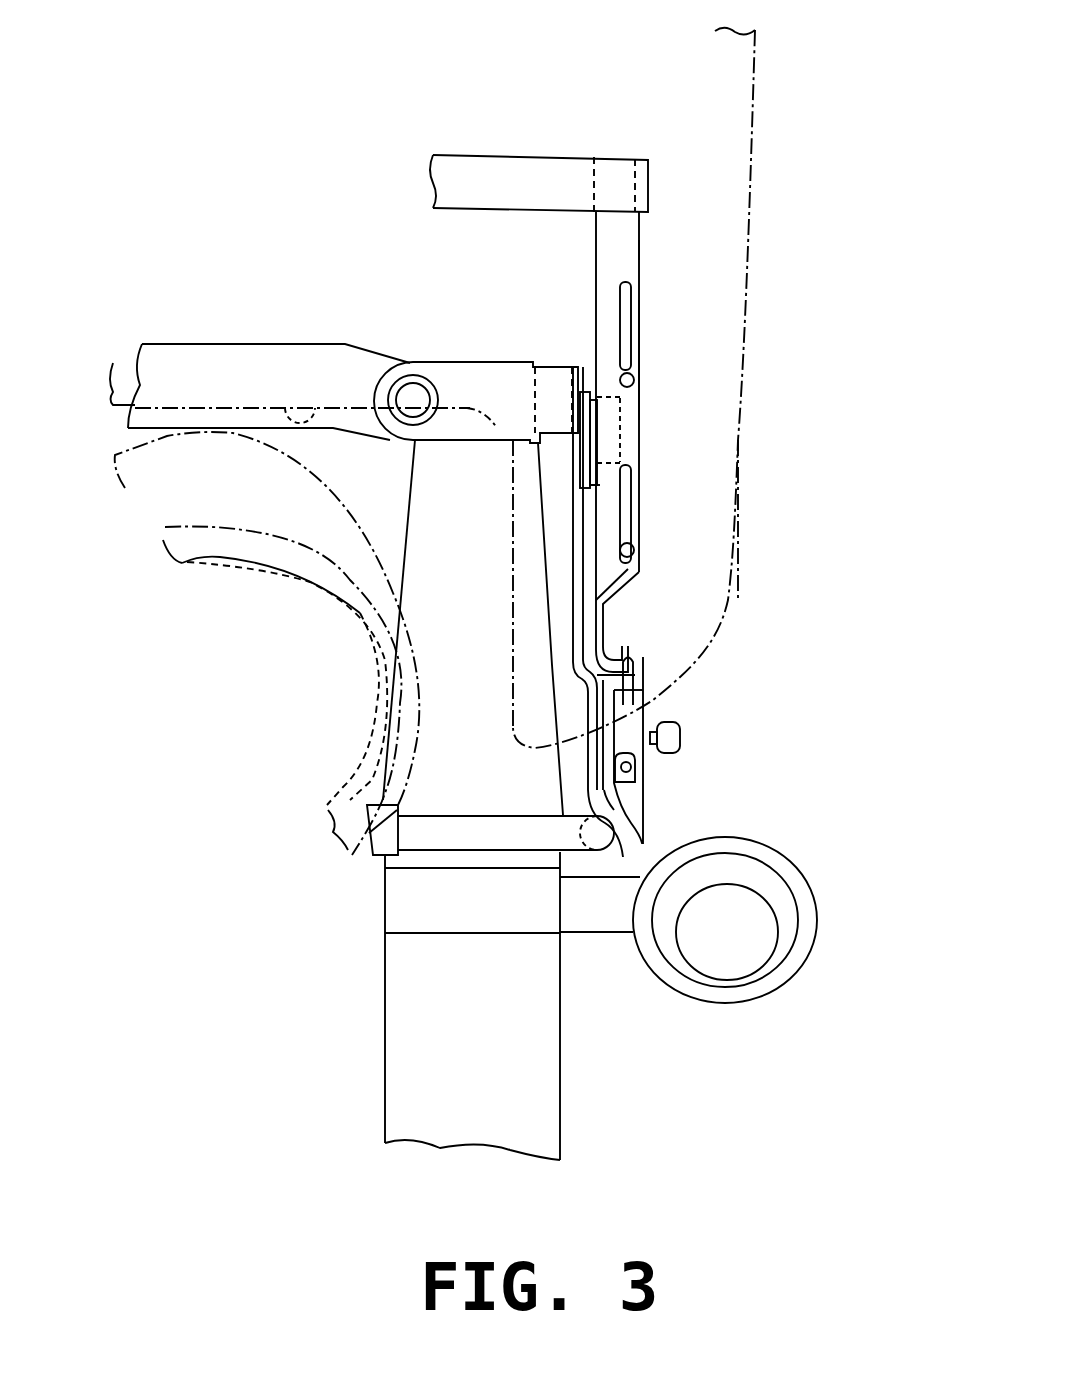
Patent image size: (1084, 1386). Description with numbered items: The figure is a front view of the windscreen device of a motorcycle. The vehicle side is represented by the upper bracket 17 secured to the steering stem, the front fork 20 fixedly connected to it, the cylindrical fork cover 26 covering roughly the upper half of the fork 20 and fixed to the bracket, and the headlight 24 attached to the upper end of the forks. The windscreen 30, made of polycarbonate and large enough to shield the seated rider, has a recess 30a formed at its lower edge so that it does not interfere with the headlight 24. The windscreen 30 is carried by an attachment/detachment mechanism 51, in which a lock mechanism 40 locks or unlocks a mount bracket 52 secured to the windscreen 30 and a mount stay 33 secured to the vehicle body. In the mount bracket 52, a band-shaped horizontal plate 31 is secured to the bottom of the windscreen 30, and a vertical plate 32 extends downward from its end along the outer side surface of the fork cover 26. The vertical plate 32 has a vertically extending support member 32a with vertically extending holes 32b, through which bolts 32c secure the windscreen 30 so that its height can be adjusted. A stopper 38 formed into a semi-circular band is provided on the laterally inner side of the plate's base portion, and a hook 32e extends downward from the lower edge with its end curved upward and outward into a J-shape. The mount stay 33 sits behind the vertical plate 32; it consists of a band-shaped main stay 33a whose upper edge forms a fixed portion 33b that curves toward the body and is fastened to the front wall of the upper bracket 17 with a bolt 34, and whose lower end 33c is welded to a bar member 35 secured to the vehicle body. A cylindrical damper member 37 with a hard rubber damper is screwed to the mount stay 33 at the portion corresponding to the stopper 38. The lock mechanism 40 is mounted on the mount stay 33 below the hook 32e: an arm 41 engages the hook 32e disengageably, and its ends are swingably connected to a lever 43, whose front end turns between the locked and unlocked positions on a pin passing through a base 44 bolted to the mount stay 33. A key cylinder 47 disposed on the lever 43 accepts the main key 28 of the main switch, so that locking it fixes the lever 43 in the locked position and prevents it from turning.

The upper bracket 17 is at (313, 330).
The front fork 20 is at (572, 1062).
The headlight 24 is at (218, 560).
The fork cover 26 is at (385, 1007).
The main key 28 is at (681, 740).
The windscreen 30 is at (768, 150).
The recess 30a is at (283, 408).
The horizontal plate 31 is at (533, 157).
The vertical plate 32 is at (590, 272).
The support member 32a is at (639, 257).
The vertically extending holes 32b is at (629, 330).
The bolts 32c is at (634, 378).
The hook 32e is at (612, 625).
The mount stay 33 is at (562, 540).
The main stay 33a is at (572, 622).
The fixed portion 33b is at (470, 362).
The lower end 33c is at (618, 832).
The bolt 34 is at (412, 383).
The bar member 35 is at (462, 816).
The damper member 37 is at (606, 494).
The stopper 38 is at (608, 395).
The lock mechanism 40 is at (666, 786).
The arm 41 is at (633, 663).
The lever 43 is at (649, 815).
The base 44 is at (635, 675).
The key cylinder 47 is at (650, 752).
The attachment/detachment mechanism 51 is at (688, 492).
The mount bracket 52 is at (648, 358).